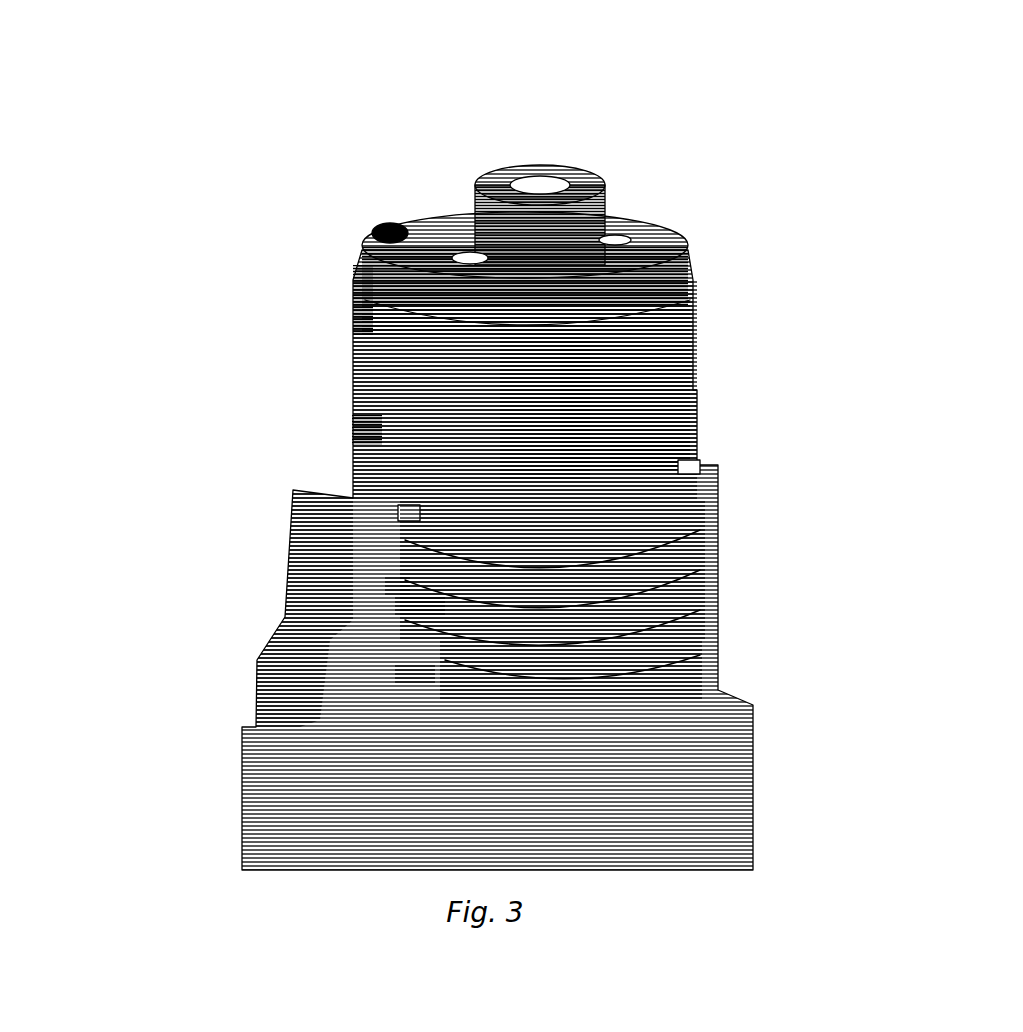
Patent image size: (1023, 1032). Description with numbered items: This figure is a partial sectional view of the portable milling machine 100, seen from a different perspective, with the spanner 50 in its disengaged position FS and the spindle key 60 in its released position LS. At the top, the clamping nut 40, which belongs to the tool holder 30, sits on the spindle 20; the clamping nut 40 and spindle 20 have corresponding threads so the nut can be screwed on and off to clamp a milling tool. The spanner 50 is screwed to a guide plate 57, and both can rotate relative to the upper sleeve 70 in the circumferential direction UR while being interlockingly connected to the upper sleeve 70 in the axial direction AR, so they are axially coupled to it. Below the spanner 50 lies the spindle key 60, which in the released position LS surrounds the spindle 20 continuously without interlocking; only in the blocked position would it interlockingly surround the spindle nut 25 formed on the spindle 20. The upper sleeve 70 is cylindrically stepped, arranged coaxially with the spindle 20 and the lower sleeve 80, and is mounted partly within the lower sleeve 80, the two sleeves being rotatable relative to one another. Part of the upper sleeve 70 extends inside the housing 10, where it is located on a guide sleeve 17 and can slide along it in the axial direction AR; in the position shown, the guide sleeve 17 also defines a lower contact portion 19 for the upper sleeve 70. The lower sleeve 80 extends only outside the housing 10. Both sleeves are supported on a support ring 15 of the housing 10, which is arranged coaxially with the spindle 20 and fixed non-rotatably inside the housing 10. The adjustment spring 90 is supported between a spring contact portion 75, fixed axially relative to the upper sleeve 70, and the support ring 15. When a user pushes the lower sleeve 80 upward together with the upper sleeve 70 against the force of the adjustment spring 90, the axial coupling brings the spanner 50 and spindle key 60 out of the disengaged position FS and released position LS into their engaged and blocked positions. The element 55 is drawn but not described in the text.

The portable milling machine 100 is at (908, 390).
The housing 10 is at (327, 495).
The support ring 15 is at (690, 473).
The guide sleeve 17 is at (440, 597).
The lower contact portion 19 is at (425, 680).
The spindle 20 is at (683, 460).
The spindle nut 25 is at (660, 400).
The tool holder 30 is at (560, 337).
The clamping nut 40 is at (582, 188).
The spanner 50 is at (630, 252).
The locking tab 55 is at (371, 228).
The guide plate 57 is at (672, 282).
The spindle key 60 is at (703, 493).
The upper sleeve 70 is at (410, 273).
The spring contact portion 75 is at (703, 643).
The lower sleeve 80 is at (353, 437).
The adjustment spring 90 is at (687, 572).
The axial direction AR is at (543, 165).
The circumferential direction UR is at (753, 243).
The disengaged position FS is at (170, 240).
The released position LS is at (185, 503).